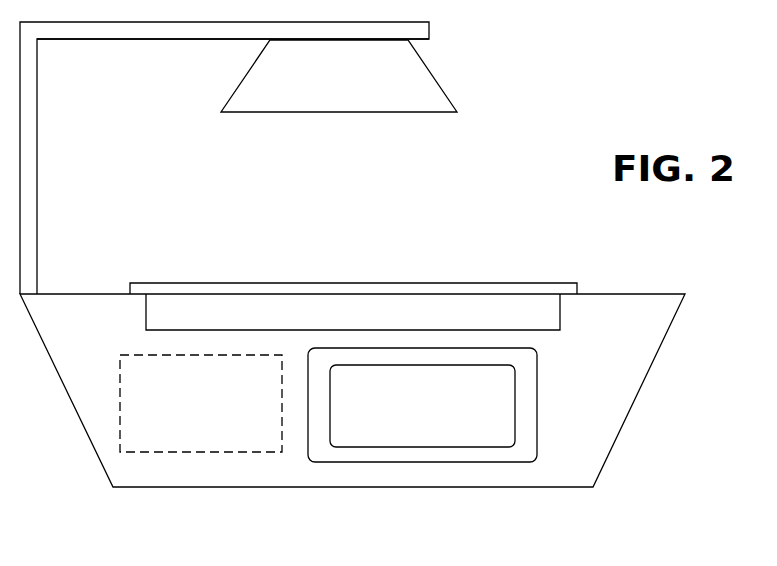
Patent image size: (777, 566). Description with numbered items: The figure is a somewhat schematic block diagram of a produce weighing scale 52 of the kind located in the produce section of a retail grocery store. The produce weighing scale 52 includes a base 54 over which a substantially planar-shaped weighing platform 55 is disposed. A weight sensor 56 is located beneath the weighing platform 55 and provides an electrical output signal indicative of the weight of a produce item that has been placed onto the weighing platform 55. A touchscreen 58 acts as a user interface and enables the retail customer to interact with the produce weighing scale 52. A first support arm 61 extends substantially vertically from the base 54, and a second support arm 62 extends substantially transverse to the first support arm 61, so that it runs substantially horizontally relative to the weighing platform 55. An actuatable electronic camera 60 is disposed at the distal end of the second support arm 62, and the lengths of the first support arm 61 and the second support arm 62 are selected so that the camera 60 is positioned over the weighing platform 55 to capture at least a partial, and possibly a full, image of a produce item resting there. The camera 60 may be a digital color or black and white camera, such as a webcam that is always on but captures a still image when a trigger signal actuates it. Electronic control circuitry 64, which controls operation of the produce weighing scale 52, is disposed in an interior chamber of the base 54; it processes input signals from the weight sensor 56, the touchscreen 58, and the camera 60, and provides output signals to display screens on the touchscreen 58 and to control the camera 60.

The produce weighing scale 52 is at (545, 88).
The base 54 is at (613, 403).
The weighing platform 55 is at (538, 288).
The weight sensor 56 is at (543, 308).
The touchscreen 58 is at (392, 447).
The electronic camera 60 is at (427, 62).
The first support arm 61 is at (30, 199).
The second support arm 62 is at (145, 31).
The electronic control circuitry 64 is at (120, 400).